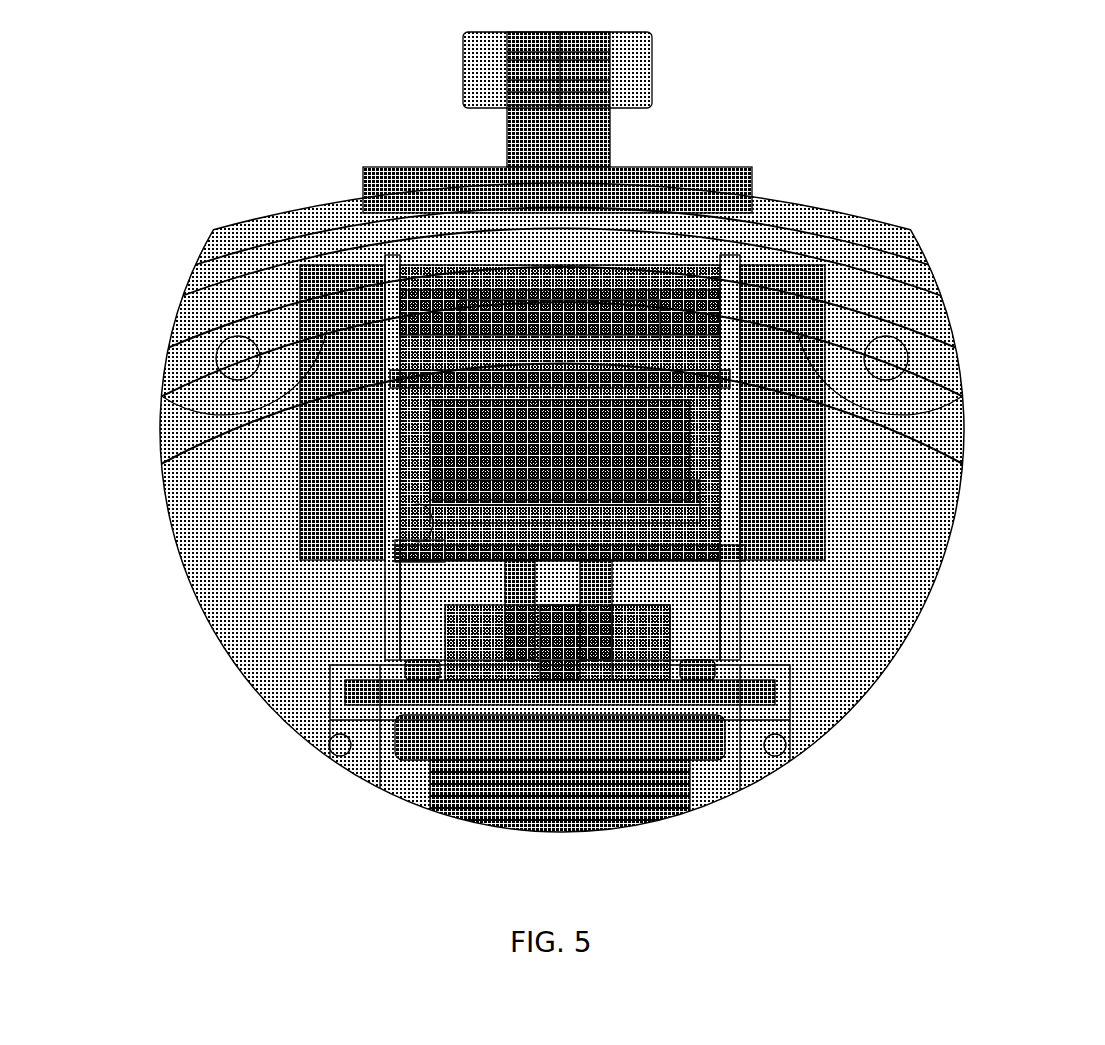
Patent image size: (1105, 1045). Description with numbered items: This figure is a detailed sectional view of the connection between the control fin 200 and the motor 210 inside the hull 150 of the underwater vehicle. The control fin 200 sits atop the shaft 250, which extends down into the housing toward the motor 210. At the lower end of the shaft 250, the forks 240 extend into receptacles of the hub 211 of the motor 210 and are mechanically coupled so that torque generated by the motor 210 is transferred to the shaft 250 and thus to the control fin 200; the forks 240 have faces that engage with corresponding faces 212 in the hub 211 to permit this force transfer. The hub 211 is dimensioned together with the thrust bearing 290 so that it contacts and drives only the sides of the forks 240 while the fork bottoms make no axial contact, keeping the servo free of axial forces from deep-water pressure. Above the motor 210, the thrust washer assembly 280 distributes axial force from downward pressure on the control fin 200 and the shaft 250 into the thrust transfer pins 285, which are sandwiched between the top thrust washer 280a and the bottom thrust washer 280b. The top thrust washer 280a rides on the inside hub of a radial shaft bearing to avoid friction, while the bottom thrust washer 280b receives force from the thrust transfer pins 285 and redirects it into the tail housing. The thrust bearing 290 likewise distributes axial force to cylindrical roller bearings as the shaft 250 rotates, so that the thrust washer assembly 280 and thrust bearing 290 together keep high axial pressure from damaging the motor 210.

The hull 150 is at (289, 205).
The control fin 200 is at (653, 68).
The shaft 250 is at (611, 135).
The thrust washer assembly 280 is at (527, 523).
The top thrust washer 280a is at (700, 501).
The bottom thrust washer 280b is at (697, 522).
The thrust bearing 290 is at (600, 556).
The thrust transfer pins 285 is at (440, 548).
The forks 240 is at (615, 603).
The hub 211 is at (678, 626).
The faces 212 is at (513, 655).
The motor 210 is at (693, 775).